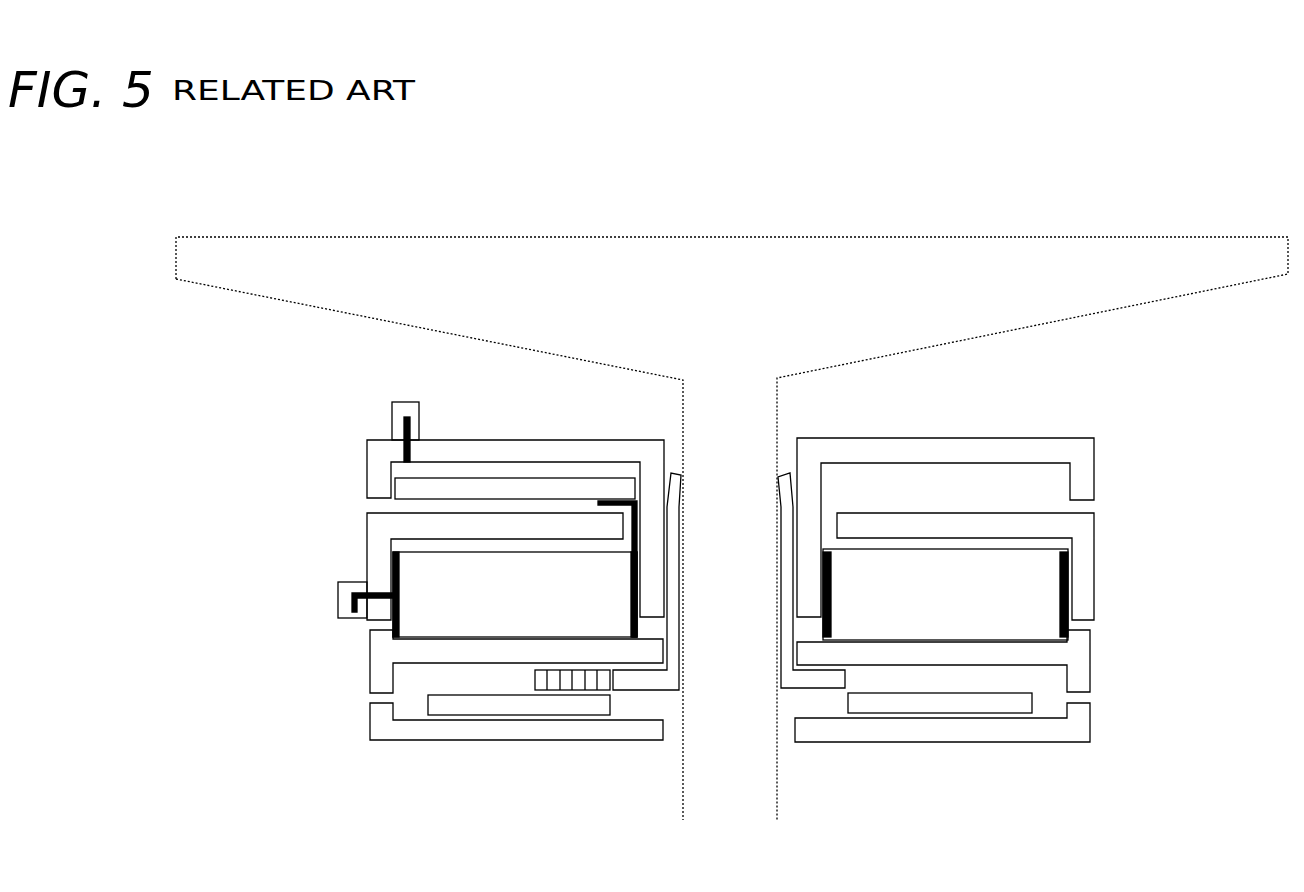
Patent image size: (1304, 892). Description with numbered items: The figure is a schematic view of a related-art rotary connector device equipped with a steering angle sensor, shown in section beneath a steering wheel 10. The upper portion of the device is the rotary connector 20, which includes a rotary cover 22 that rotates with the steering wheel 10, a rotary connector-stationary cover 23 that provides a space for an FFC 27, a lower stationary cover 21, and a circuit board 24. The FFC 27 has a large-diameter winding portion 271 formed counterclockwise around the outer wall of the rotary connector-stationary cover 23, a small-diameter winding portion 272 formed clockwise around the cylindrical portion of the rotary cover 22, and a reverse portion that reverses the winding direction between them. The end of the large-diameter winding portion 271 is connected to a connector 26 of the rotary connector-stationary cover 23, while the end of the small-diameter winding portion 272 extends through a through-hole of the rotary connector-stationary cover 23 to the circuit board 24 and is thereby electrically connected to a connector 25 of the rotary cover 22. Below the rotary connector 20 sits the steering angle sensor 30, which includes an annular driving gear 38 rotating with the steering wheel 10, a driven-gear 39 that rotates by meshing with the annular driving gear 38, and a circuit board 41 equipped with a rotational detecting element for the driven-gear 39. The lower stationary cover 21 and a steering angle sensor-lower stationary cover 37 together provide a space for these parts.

The steering wheel 10 is at (970, 236).
The rotary connector 20 is at (1122, 442).
The lower stationary cover 21 is at (370, 645).
The rotary cover 22 is at (557, 440).
The rotary connector-stationary cover 23 is at (368, 560).
The circuit board 24 is at (485, 477).
The connector 25 is at (420, 413).
The connector 26 is at (338, 603).
The FFC 27 is at (447, 552).
The large-diameter winding portion 271 is at (393, 572).
The small-diameter winding portion 272 is at (627, 598).
The steering angle sensor 30 is at (1122, 660).
The steering angle sensor-lower stationary cover 37 is at (398, 742).
The annular driving gear 38 is at (637, 690).
The driven-gear 39 is at (535, 677).
The circuit board 41 is at (560, 708).